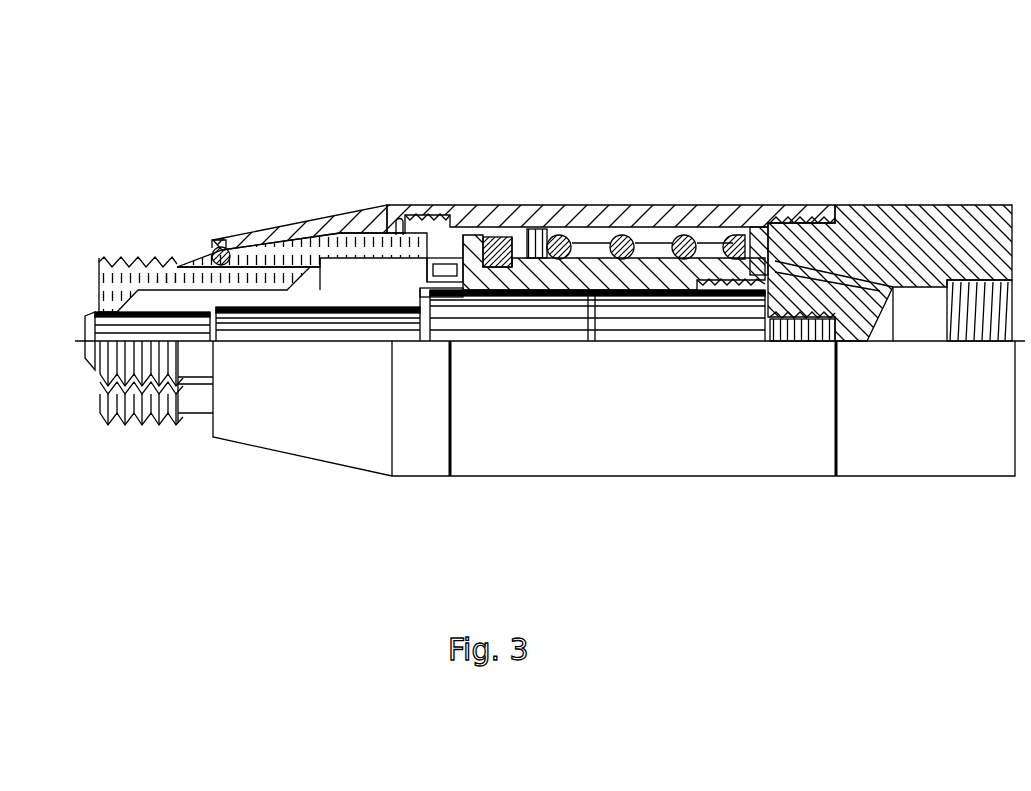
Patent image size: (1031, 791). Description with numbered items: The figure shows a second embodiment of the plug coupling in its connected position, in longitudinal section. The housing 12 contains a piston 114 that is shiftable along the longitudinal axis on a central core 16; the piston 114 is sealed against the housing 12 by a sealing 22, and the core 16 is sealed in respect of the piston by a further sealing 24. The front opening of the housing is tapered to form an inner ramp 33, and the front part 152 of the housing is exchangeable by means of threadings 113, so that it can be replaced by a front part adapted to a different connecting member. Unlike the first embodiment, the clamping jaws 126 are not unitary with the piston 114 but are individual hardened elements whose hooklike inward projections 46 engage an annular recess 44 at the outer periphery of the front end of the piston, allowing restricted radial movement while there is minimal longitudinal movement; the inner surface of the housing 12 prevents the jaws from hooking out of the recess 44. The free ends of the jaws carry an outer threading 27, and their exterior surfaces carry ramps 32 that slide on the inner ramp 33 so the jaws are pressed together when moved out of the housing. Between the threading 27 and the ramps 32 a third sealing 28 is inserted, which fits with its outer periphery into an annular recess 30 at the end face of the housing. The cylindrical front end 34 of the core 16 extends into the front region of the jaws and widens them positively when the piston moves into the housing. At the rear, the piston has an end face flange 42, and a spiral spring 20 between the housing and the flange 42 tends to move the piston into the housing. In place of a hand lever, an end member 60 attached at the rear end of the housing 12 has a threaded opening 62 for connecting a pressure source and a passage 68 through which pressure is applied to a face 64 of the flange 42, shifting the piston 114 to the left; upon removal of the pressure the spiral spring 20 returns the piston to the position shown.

The housing 12 is at (735, 452).
The core 16 is at (403, 330).
The spiral spring 20 is at (622, 230).
The sealing 22 is at (498, 248).
The further sealing 24 is at (595, 338).
The outer threading 27 is at (122, 258).
The third sealing 28 is at (213, 250).
The annular recess 30 is at (219, 240).
The ramps 32 is at (295, 248).
The inner ramp 33 is at (272, 233).
The front end of the core 34 is at (138, 330).
The end face flange 42 is at (745, 275).
The annular recess 44 is at (452, 292).
The inward projections 46 is at (442, 252).
The end member 60 is at (962, 237).
The threaded opening 62 is at (973, 333).
The face of the flange 64 is at (762, 250).
The passage 68 is at (848, 280).
The threadings 113 is at (399, 222).
The piston 114 is at (643, 277).
The clamping jaws 126 is at (338, 213).
The front part of the housing 152 is at (277, 250).